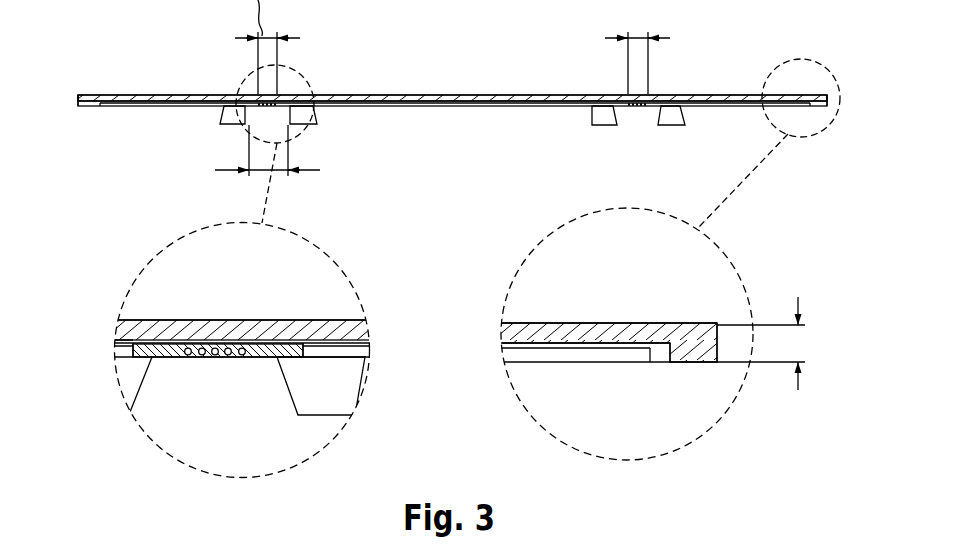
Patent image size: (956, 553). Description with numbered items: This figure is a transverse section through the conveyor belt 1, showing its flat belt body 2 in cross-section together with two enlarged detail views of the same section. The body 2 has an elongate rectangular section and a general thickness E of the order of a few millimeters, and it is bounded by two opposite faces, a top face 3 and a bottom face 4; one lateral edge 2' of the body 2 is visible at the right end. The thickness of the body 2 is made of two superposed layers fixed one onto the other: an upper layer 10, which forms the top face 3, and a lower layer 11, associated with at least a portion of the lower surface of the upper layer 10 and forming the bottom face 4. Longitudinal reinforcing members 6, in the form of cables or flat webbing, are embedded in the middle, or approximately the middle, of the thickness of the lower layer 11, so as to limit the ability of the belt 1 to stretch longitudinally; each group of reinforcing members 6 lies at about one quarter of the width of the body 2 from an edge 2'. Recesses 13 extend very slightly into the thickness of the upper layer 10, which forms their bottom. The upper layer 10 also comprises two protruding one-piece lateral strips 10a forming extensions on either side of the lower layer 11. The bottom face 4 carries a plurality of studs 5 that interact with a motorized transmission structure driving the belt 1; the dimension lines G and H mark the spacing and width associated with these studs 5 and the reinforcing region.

The conveyor belt 1 is at (737, 64).
The flat belt body 2 is at (98, 183).
The edge of the body 2' is at (771, 193).
The top face 3 is at (388, 93).
The bottom face 4 is at (388, 108).
The studs 5 is at (592, 115).
The longitudinal reinforcing members 6 is at (213, 362).
The upper layer 10 is at (482, 95).
The lateral strips 10a is at (693, 364).
The lower layer 11 is at (117, 107).
The recesses 13 is at (368, 349).
The gap dimension G is at (225, 170).
The width dimension H is at (636, 37).
The general thickness E is at (800, 342).